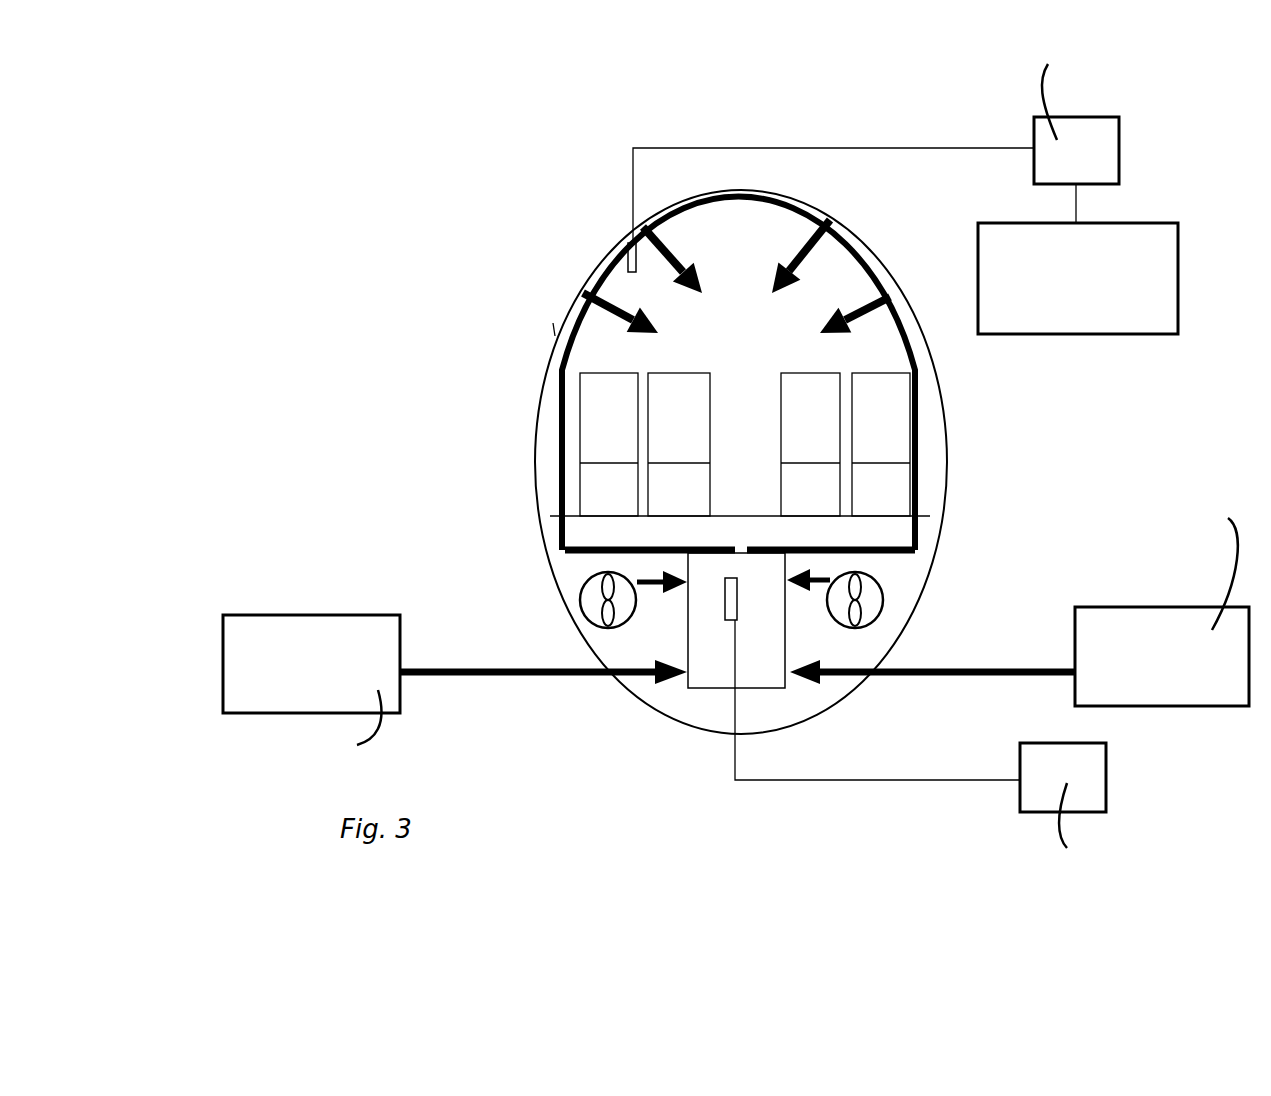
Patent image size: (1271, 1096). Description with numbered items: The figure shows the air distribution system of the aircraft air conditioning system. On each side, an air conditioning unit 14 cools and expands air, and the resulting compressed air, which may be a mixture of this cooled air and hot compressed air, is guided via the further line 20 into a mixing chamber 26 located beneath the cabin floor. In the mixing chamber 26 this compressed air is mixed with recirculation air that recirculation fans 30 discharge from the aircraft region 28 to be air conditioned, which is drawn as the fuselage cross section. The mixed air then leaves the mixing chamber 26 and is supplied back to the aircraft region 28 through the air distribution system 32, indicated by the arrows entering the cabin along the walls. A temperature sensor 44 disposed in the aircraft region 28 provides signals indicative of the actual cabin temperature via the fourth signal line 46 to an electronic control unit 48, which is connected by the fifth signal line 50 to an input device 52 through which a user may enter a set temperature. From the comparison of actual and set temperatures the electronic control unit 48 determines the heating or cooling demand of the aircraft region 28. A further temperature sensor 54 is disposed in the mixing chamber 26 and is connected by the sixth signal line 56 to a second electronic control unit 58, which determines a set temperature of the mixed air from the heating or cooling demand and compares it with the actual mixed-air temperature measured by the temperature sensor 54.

The air conditioning unit 14 is at (297, 632).
The further line 20 is at (478, 684).
The mixing chamber 26 is at (707, 675).
The aircraft region to be air conditioned 28 is at (727, 212).
The recirculation fan 30 is at (582, 604).
The air distribution system 32 is at (880, 262).
The temperature sensor 44 is at (636, 272).
The fourth signal line 46 is at (840, 148).
The electronic control unit 48 is at (1105, 147).
The fifth signal line 50 is at (1076, 200).
The input device 52 is at (1097, 316).
The further temperature sensor 54 is at (738, 590).
The sixth signal line 56 is at (795, 780).
The electronic control unit 58 is at (1095, 778).